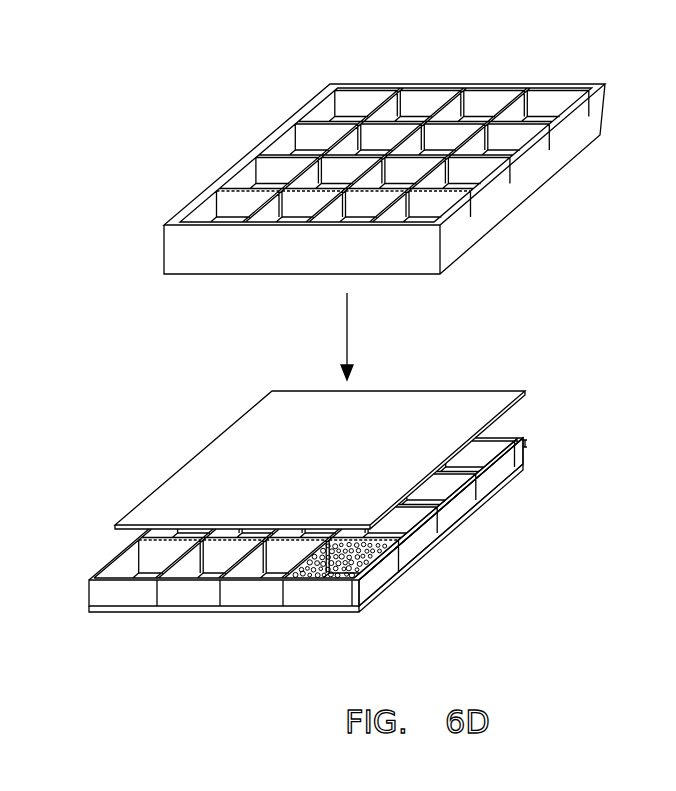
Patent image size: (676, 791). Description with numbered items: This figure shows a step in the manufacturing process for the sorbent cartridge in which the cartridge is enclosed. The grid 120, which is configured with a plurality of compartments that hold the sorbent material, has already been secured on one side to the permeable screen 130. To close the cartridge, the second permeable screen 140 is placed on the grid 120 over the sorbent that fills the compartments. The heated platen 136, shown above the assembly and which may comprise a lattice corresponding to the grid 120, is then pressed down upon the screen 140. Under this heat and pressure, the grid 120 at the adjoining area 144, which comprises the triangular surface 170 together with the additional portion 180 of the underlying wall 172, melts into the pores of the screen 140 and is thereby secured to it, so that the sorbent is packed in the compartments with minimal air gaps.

The grid 120 is at (20, 486).
The screen 130 is at (483, 500).
The heated platen 136 is at (497, 200).
The screen 140 is at (457, 407).
The adjoining area 144 is at (420, 528).
The triangular surface 170 is at (525, 443).
The underlying wall 172 is at (505, 465).
The additional portion 180 is at (78, 593).